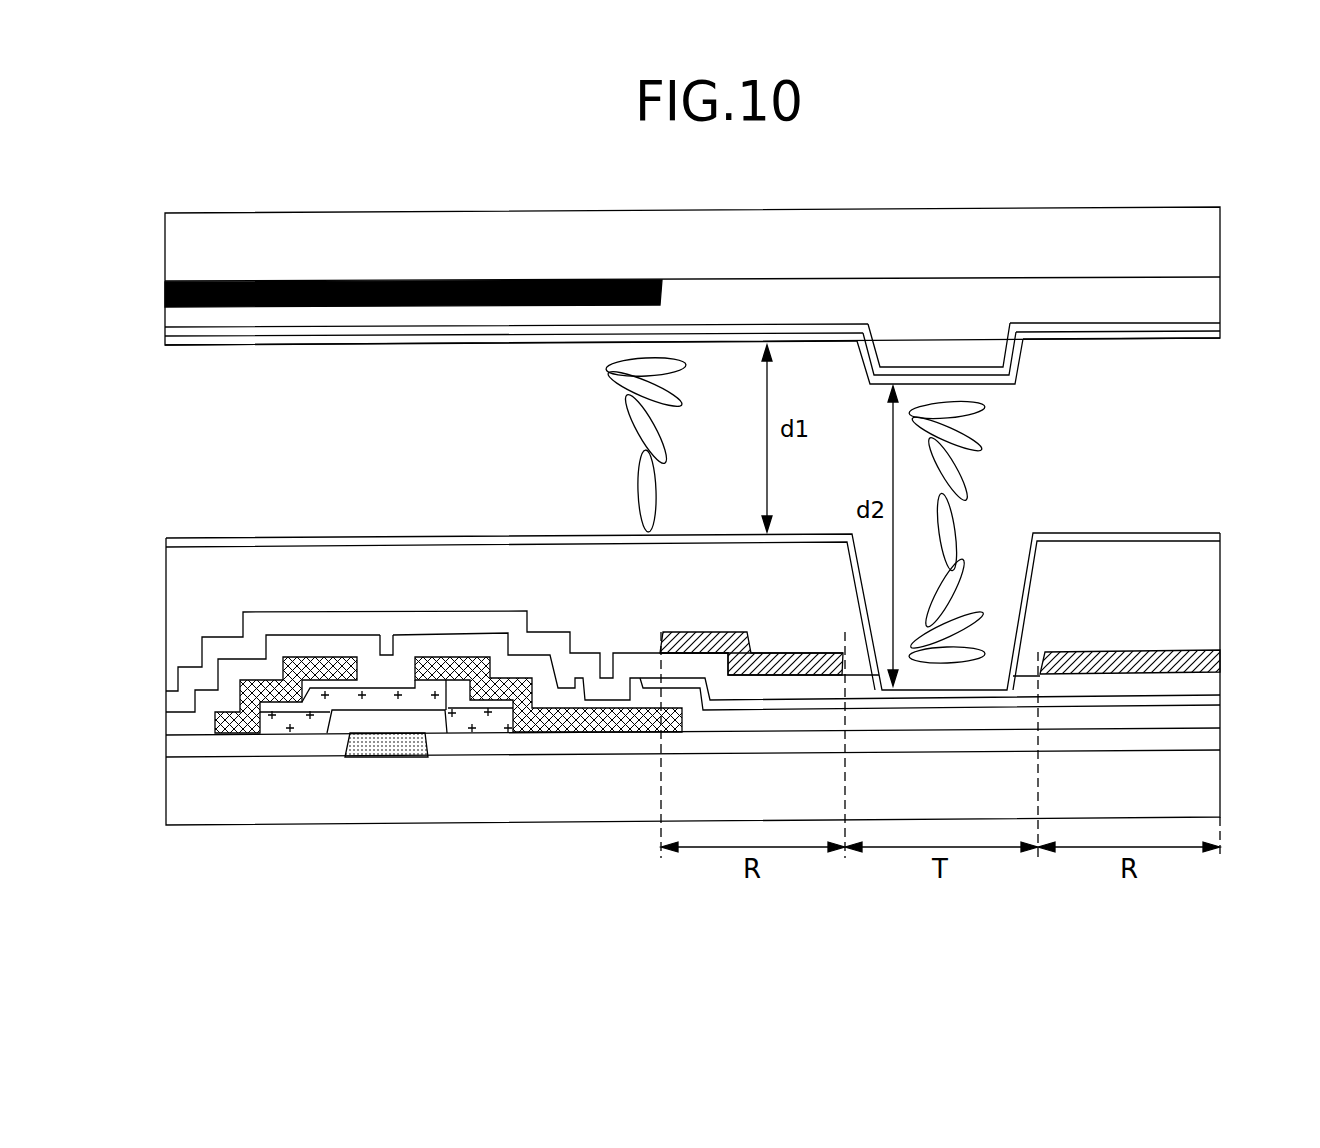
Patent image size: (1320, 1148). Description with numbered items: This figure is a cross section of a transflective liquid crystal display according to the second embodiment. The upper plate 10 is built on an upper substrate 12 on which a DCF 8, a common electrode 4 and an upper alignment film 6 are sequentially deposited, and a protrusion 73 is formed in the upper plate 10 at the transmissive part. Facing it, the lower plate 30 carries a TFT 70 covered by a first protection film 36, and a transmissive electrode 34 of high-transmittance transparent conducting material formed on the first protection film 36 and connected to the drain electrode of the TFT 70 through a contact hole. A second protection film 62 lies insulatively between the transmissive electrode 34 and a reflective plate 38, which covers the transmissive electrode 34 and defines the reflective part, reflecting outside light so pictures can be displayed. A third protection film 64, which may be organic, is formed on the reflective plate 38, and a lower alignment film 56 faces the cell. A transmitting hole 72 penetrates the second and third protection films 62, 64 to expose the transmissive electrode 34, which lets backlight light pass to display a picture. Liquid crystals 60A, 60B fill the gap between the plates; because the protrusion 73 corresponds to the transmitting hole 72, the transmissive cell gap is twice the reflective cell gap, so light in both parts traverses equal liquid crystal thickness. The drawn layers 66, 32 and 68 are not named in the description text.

The upper plate 10 is at (156, 213).
The upper substrate 12 is at (1222, 240).
The DCF 8 is at (1222, 298).
The common electrode 4 is at (1222, 325).
The upper alignment film 6 is at (1199, 340).
The protrusion 73 is at (1010, 363).
The liquid crystals 60A is at (657, 433).
The liquid crystals 60B is at (957, 477).
The transmitting hole 72 is at (1000, 562).
The TFT 70 is at (424, 624).
The lower plate 30 is at (156, 538).
The lower alignment film 56 is at (1222, 533).
The third protection film 64 is at (1222, 595).
The reflective plate 38 is at (1222, 662).
The second protection film 62 is at (1222, 685).
The first protection film 36 is at (1222, 713).
The storage electrode line 66 is at (1222, 740).
The lower substrate 32 is at (1222, 785).
The transmissive electrode 34 is at (1132, 700).
The thin film transistor source/drain electrodes 68 is at (606, 690).